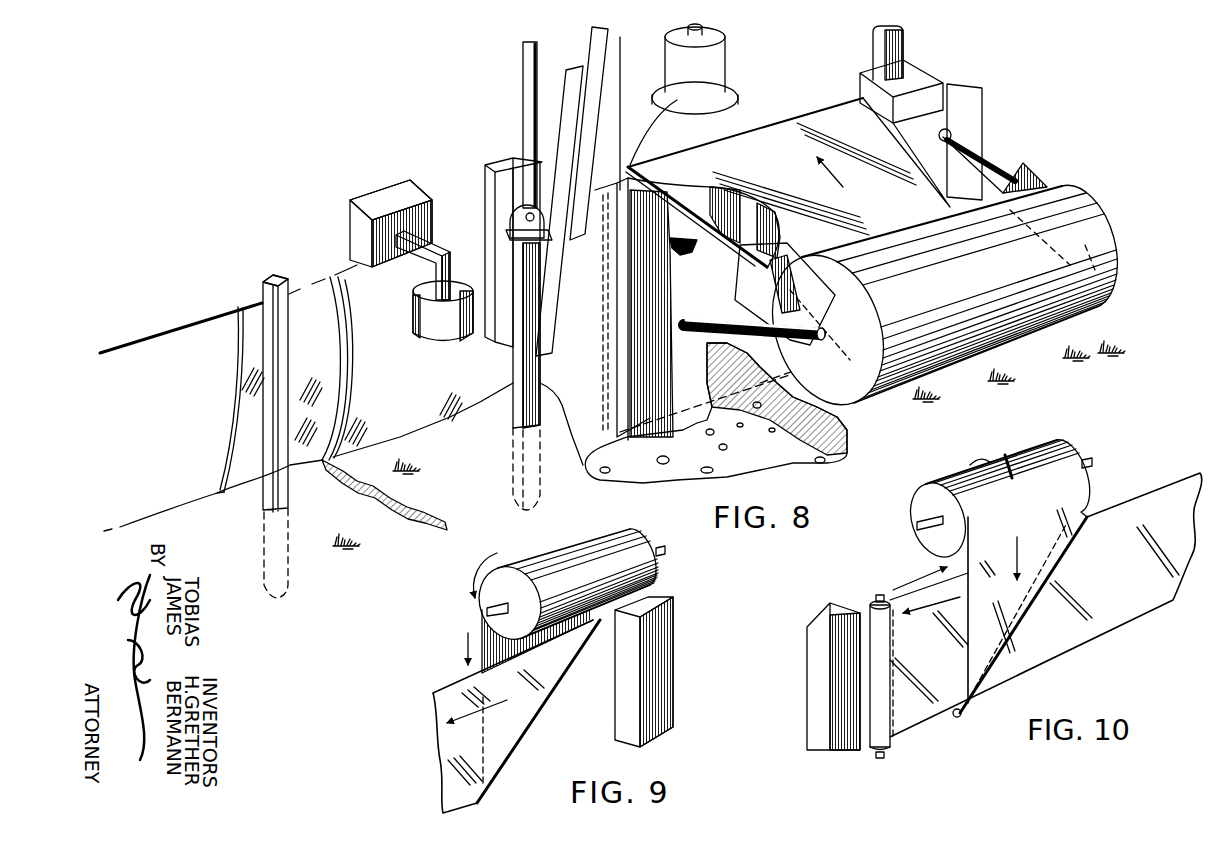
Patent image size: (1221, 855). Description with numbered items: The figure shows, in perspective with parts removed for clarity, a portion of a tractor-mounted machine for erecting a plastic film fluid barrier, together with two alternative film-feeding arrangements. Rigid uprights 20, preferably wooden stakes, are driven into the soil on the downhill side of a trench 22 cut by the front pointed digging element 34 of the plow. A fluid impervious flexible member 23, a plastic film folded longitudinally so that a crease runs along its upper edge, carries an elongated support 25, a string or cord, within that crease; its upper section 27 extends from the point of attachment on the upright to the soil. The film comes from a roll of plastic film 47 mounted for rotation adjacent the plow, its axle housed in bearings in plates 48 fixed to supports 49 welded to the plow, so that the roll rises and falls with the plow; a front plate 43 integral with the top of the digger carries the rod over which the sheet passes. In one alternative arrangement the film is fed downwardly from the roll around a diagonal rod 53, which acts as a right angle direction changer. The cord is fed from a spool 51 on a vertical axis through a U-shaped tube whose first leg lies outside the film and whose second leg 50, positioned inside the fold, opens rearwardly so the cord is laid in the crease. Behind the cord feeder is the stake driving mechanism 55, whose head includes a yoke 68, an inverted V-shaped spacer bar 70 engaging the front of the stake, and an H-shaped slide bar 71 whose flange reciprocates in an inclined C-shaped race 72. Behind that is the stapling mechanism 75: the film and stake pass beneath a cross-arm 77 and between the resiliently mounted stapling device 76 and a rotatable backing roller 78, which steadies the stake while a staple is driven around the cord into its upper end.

In FIG. 8, the rigid upright 20 is at (287, 310).
In FIG. 8, the trench 22 is at (222, 494).
In FIG. 8, the flexible member 23 is at (257, 312).
In FIG. 8, the elongated support 25 is at (160, 330).
In FIG. 8, the upper section 27 is at (226, 371).
In FIG. 8, the digging element 34 is at (980, 110).
In FIG. 9, the digging element 34 is at (665, 652).
In FIG. 10, the digging element 34 is at (810, 673).
In FIG. 8, the front plate 43 is at (930, 90).
In FIG. 8, the roll of plastic film 47 is at (1097, 221).
In FIG. 9, the roll of plastic film 47 is at (620, 528).
In FIG. 10, the roll of plastic film 47 is at (1065, 462).
In FIG. 8, the plates 48 is at (777, 273).
In FIG. 8, the supports 49 is at (697, 337).
In FIG. 8, the second leg 50 is at (605, 190).
In FIG. 8, the spool 51 is at (717, 74).
In FIG. 10, the diagonal rod 53 is at (960, 716).
In FIG. 8, the stake driving mechanism 55 is at (547, 122).
In FIG. 8, the yoke 68 is at (507, 240).
In FIG. 8, the spacer bar 70 is at (545, 280).
In FIG. 8, the slide bar 71 is at (571, 142).
In FIG. 8, the race 72 is at (596, 27).
In FIG. 8, the stapling mechanism 75 is at (381, 187).
In FIG. 8, the stapling device 76 is at (363, 197).
In FIG. 8, the cross-arm 77 is at (422, 250).
In FIG. 8, the backing roller 78 is at (412, 313).